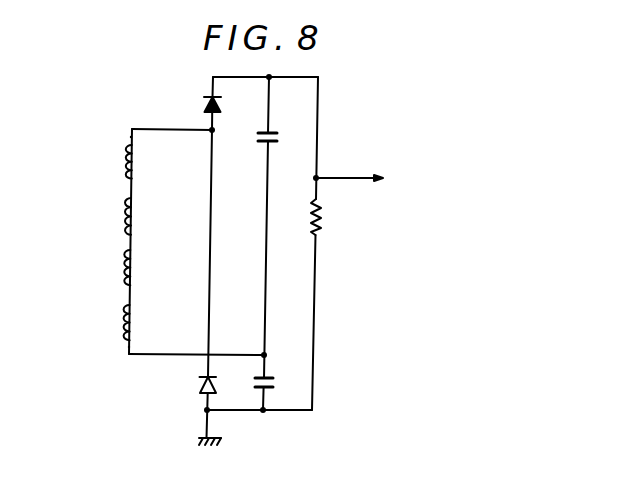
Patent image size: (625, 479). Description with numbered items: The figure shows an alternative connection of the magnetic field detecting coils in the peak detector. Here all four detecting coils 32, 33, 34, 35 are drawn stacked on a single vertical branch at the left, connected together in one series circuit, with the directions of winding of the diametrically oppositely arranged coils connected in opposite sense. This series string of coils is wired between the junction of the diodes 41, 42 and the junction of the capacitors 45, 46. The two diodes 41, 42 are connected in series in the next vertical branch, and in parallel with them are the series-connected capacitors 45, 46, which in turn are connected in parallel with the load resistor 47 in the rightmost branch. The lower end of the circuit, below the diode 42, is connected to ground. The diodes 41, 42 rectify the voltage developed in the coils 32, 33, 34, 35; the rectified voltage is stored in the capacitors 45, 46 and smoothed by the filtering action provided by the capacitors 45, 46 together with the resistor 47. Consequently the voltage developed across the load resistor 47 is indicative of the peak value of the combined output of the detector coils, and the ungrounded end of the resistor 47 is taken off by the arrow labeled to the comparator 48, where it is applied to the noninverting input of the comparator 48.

The detecting coil 32 is at (138, 318).
The detecting coil 33 is at (137, 258).
The detecting coil 34 is at (136, 218).
The detecting coil 35 is at (136, 162).
The diode 41 is at (204, 103).
The diode 42 is at (199, 388).
The capacitor 45 is at (277, 137).
The capacitor 46 is at (293, 369).
The load resistor 47 is at (322, 225).
The comparator 48 is at (416, 179).